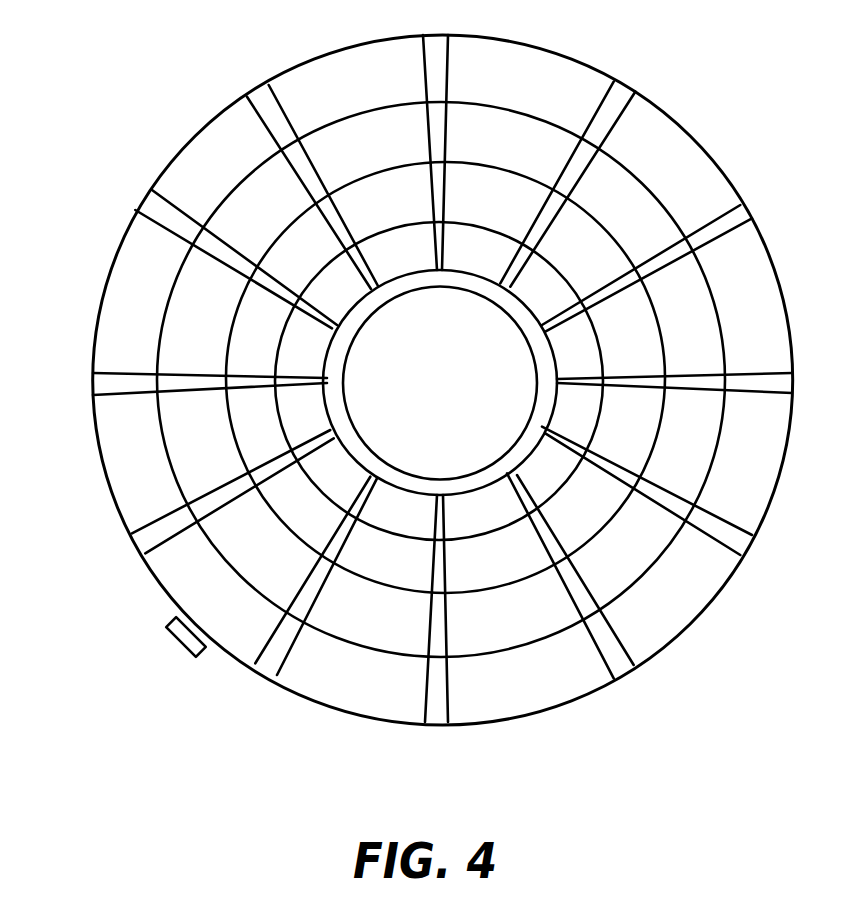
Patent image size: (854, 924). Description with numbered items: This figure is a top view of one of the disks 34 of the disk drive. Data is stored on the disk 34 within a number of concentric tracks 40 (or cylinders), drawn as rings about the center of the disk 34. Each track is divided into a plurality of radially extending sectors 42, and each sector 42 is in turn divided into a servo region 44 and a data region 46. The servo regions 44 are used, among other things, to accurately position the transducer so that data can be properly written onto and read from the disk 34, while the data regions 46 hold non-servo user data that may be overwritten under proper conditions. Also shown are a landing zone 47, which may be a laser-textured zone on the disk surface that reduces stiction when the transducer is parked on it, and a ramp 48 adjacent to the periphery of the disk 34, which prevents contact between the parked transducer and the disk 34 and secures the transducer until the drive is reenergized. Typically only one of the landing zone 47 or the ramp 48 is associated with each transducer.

The disk 34 is at (124, 96).
The concentric tracks 40 is at (457, 497).
The sector 42 is at (611, 691).
The servo region 44 is at (644, 673).
The data region 46 is at (746, 563).
The landing zone 47 is at (352, 442).
The ramp 48 is at (181, 646).